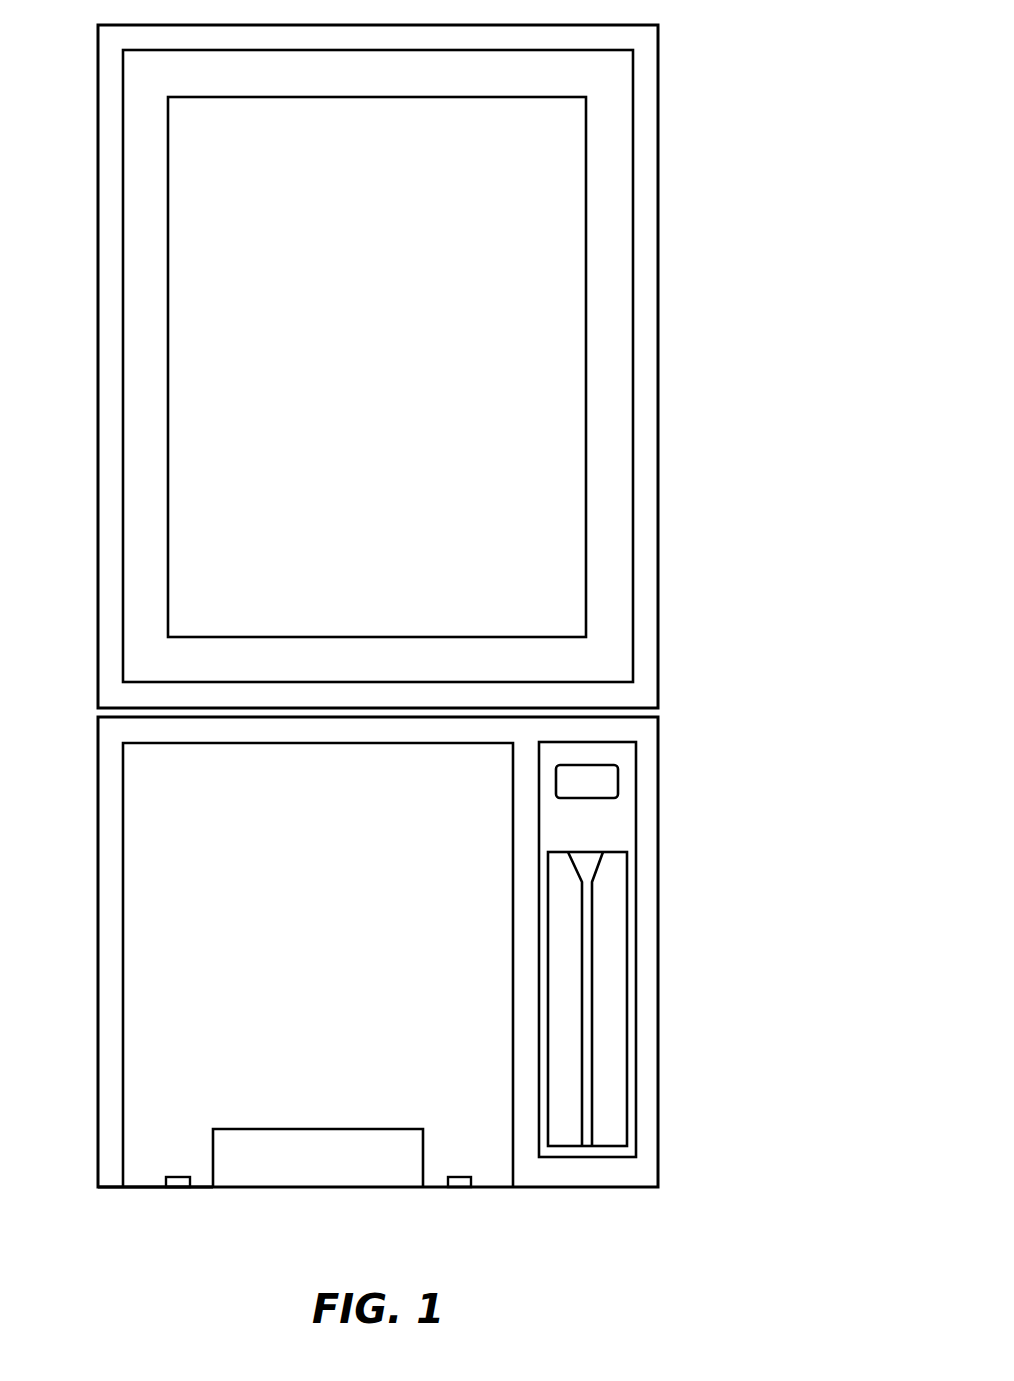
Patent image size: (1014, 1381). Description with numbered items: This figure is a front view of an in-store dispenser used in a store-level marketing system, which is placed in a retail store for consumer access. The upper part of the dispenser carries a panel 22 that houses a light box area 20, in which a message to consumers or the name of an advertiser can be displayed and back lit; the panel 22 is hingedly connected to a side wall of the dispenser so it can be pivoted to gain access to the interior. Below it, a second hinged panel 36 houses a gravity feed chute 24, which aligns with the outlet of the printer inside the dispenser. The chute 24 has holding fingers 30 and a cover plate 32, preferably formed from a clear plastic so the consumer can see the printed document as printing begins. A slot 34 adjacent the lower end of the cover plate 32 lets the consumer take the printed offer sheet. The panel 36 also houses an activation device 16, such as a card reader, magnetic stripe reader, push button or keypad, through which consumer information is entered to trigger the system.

The activation device 16 is at (632, 980).
The light box area 20 is at (378, 251).
The panel 22 is at (658, 28).
The gravity feed chute 24 is at (148, 903).
The holding fingers 30 is at (177, 1190).
The cover plate 32 is at (341, 873).
The slot 34 is at (312, 1152).
The panel 36 is at (142, 1190).